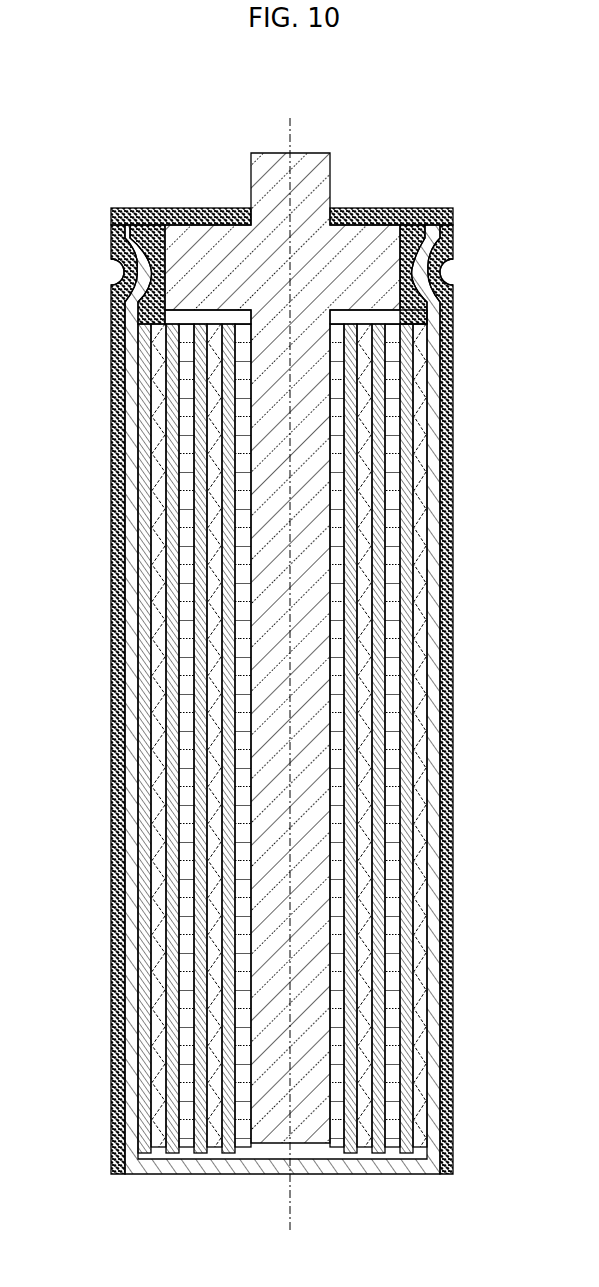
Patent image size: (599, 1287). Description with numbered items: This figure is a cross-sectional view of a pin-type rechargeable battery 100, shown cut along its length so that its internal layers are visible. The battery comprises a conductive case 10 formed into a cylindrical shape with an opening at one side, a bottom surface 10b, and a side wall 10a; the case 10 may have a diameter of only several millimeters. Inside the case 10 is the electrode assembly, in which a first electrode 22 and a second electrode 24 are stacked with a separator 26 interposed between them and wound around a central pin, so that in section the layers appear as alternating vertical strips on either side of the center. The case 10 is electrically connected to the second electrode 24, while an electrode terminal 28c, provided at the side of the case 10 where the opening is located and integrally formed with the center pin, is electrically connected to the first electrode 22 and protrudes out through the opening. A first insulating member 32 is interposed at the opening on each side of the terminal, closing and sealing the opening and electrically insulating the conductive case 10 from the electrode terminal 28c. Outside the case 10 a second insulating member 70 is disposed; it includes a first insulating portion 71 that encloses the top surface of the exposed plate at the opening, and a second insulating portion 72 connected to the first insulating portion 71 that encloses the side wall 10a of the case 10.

The rechargeable battery 100 is at (309, 77).
The case 10 is at (52, 1119).
The side wall 10a is at (133, 1130).
The bottom surface 10b is at (142, 1167).
The first electrode 22 is at (188, 1150).
The second electrode 24 is at (155, 1092).
The separator 26 is at (148, 1043).
The electrode terminal 28c is at (317, 153).
The first insulating member 32 is at (152, 243).
The second insulating member 70 is at (513, 210).
The first insulating portion 71 is at (455, 213).
The second insulating portion 72 is at (455, 243).